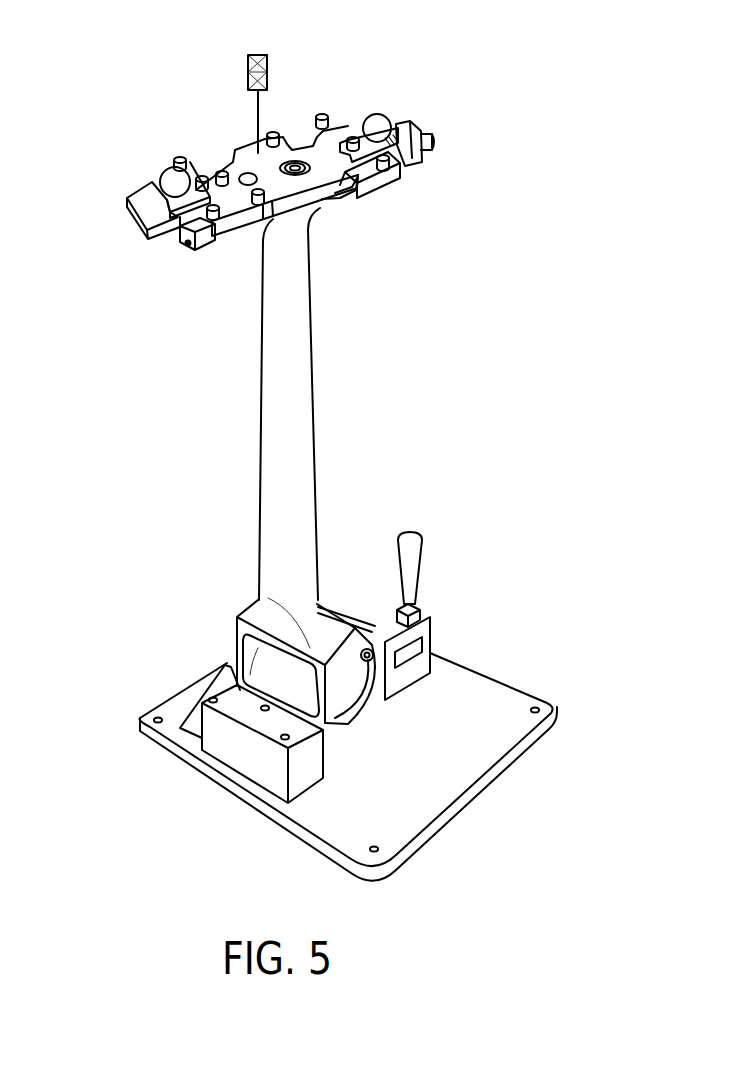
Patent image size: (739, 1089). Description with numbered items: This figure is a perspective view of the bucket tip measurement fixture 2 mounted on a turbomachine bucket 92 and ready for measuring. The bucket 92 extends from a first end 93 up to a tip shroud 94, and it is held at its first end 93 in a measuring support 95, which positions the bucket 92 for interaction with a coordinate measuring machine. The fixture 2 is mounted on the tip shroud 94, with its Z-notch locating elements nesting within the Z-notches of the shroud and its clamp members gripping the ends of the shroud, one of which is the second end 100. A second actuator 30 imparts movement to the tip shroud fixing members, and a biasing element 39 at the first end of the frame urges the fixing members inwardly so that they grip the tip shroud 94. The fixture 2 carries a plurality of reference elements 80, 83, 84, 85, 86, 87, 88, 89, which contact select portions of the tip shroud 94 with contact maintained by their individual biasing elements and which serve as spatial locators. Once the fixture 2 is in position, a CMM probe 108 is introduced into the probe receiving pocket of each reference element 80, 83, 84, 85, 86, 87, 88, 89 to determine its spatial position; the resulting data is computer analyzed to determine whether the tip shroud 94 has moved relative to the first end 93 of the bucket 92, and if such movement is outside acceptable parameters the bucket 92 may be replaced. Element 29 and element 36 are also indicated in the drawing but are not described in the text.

The bucket tip measurement fixture 2 is at (131, 158).
The locating ball 29 is at (380, 114).
The second actuator 30 is at (150, 176).
The locating ring 36 is at (293, 160).
The biasing element 39 is at (424, 132).
The reference element 80 is at (355, 134).
The reference element 83 is at (322, 114).
The reference element 84 is at (402, 168).
The reference element 85 is at (275, 130).
The reference element 86 is at (258, 212).
The reference element 87 is at (200, 236).
The reference element 88 is at (218, 172).
The reference element 89 is at (170, 166).
The turbomachine bucket 92 is at (324, 373).
The first end 93 is at (355, 716).
The tip shroud 94 is at (318, 205).
The measuring support 95 is at (503, 722).
The second end 100 is at (345, 192).
The CMM probe 108 is at (232, 108).